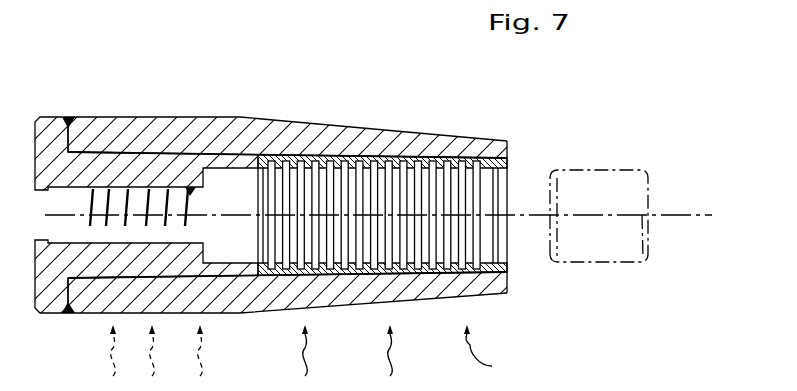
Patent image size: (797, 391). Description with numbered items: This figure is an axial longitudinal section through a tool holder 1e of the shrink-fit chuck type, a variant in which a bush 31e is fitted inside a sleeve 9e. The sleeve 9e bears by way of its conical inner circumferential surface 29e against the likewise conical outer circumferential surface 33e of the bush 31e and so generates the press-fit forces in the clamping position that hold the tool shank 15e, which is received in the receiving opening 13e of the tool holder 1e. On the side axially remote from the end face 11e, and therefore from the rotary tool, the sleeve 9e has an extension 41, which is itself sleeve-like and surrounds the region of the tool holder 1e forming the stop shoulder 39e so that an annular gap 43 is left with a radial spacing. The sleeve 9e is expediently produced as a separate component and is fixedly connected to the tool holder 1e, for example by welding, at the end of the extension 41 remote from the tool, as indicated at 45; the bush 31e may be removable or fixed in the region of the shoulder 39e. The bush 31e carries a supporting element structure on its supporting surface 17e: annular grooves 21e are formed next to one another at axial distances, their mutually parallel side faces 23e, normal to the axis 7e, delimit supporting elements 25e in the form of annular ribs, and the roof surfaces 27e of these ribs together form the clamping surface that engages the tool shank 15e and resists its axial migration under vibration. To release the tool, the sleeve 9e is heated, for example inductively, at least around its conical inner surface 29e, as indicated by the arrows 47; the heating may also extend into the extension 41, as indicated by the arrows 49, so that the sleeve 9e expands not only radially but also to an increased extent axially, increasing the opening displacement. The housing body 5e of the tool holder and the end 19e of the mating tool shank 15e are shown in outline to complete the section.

The tool holder 1e is at (112, 99).
The housing 5e is at (429, 119).
The sleeve 9e is at (300, 130).
The extension 41 is at (154, 130).
The annular gap 43 is at (190, 150).
The connection point 45 is at (66, 315).
The end face 11e is at (511, 149).
The side faces 23e is at (440, 160).
The stop shoulder 39e is at (263, 155).
The receiving opening 13e is at (492, 245).
The roof surfaces 27e is at (305, 256).
The supporting elements 25e is at (310, 264).
The conical inner circumferential surface 29e is at (348, 153).
The conical outer circumferential surface 33e is at (368, 153).
The supporting surface 17e is at (379, 254).
The bush 31e is at (390, 152).
The annular grooves 21e is at (420, 264).
The longitudinal axis 7e is at (678, 214).
The tool shank 15e is at (599, 162).
The plug end 19e is at (598, 270).
The arrows 47 is at (409, 355).
The arrows 49 is at (156, 358).